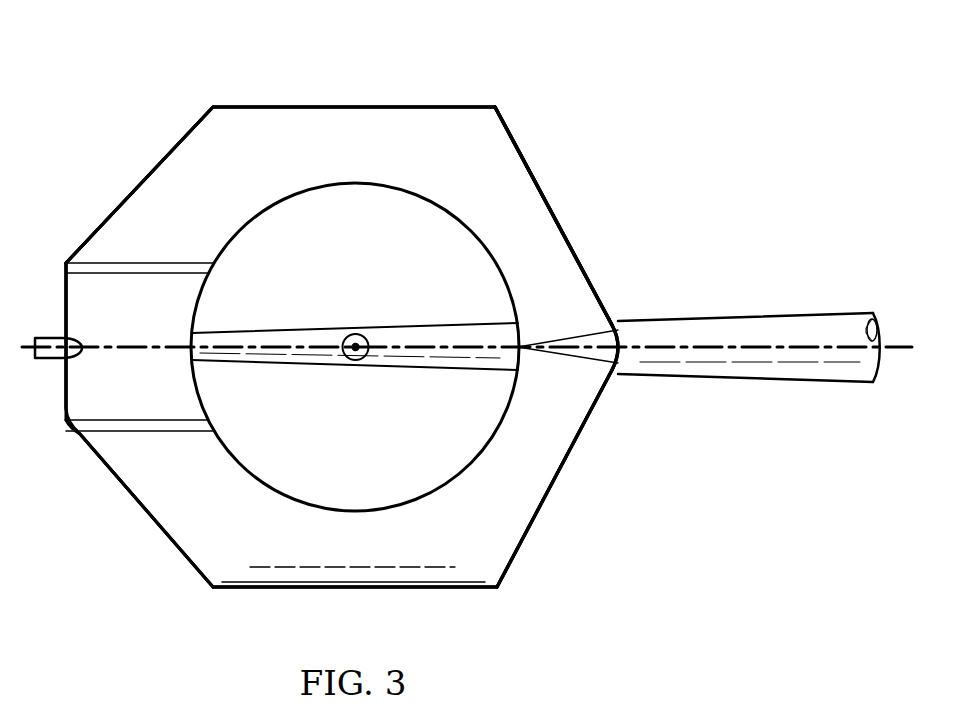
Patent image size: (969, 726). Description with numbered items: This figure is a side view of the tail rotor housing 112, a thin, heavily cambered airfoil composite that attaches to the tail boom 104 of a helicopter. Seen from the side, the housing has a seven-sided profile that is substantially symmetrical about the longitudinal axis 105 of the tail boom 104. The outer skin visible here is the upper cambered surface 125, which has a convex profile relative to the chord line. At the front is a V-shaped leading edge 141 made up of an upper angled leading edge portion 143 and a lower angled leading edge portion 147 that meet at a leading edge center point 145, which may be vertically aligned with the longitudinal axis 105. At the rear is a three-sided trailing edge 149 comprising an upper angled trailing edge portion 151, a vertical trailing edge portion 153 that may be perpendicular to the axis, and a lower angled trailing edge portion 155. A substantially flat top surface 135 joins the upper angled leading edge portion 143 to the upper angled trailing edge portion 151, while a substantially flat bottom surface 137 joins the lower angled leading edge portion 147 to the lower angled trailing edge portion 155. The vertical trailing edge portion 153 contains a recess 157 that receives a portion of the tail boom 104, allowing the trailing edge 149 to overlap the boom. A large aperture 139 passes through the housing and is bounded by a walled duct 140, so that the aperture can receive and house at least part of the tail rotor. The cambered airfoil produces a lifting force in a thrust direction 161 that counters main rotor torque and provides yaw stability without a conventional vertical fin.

The tail boom 104 is at (800, 315).
The longitudinal axis 105 is at (895, 345).
The tail rotor housing 112 is at (540, 74).
The upper cambered surface 125 is at (490, 152).
The top surface 135 is at (298, 105).
The bottom surface 137 is at (355, 590).
The aperture 139 is at (440, 264).
The walled duct 140 is at (292, 210).
The leading edge 141 is at (545, 191).
The upper angled leading edge portion 143 is at (570, 238).
The leading edge center point 145 is at (622, 354).
The lower angled leading edge portion 147 is at (557, 477).
The trailing edge 149 is at (168, 154).
The upper angled trailing edge portion 151 is at (125, 200).
The vertical trailing edge portion 153 is at (66, 288).
The lower angled trailing edge portion 155 is at (138, 510).
The recess 157 is at (84, 342).
The thrust direction 161 is at (351, 333).